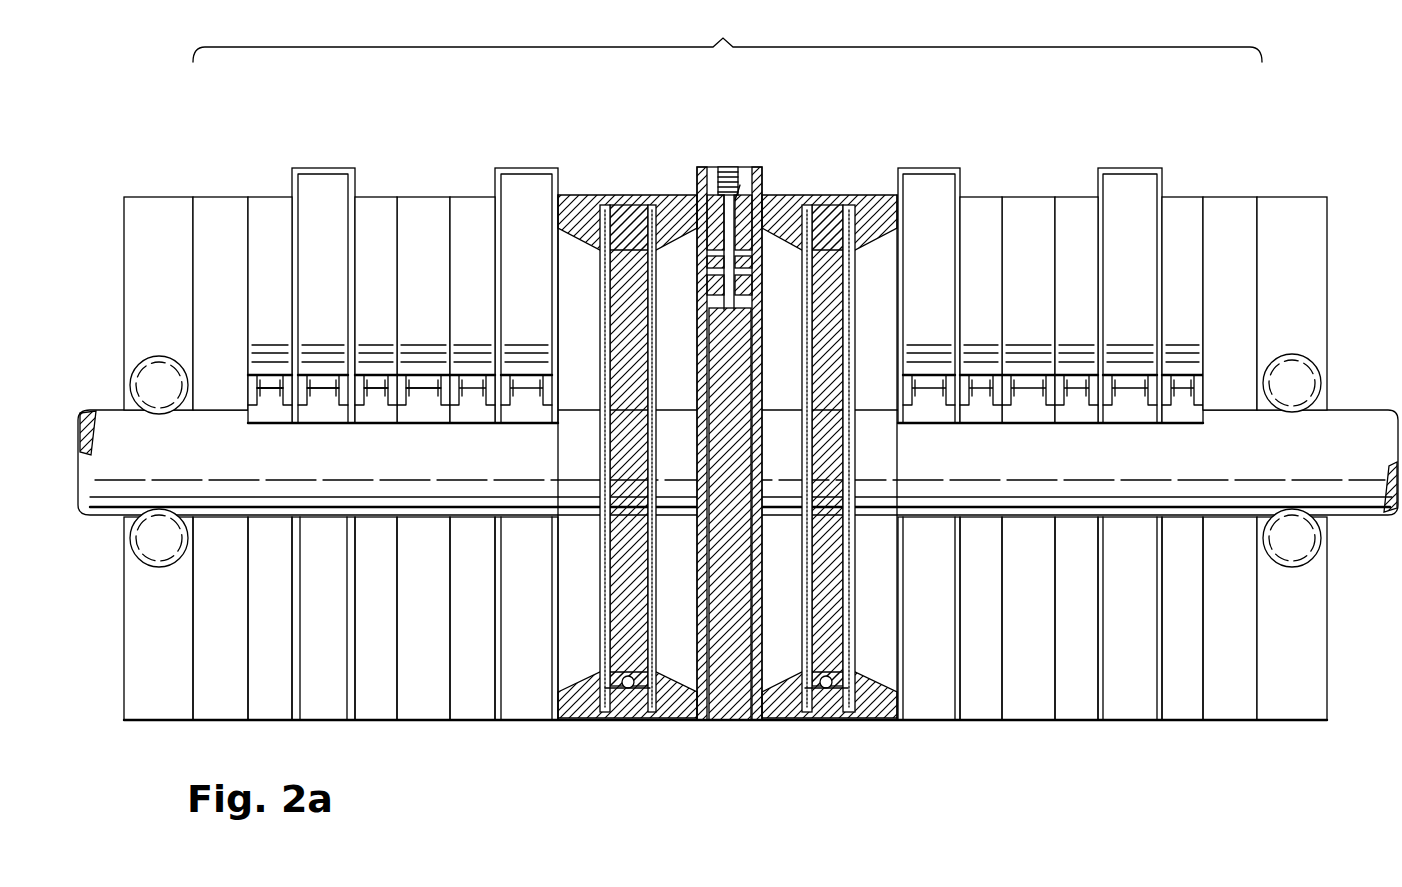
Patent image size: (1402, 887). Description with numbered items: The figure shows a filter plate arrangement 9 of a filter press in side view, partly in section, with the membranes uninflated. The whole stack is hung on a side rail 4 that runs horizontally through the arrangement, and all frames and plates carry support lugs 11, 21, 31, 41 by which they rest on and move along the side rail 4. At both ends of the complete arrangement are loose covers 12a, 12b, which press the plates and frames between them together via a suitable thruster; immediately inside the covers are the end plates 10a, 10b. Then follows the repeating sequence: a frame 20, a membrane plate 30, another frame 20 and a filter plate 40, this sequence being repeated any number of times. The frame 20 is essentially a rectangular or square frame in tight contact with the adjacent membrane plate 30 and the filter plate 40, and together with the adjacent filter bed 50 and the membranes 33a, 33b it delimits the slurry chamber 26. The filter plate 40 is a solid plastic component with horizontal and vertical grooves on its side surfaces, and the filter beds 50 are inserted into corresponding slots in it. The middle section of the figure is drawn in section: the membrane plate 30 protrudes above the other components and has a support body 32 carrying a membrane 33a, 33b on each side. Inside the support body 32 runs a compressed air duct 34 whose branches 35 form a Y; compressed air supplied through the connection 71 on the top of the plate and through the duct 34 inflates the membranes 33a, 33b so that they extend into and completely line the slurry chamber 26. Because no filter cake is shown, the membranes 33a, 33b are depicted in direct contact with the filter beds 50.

The plate arrangement 9 is at (723, 38).
The side rail 4 is at (1347, 485).
The loose cover 12a is at (150, 215).
The loose cover 12b is at (1292, 215).
The end plate 10a is at (218, 215).
The end plate 10b is at (1228, 215).
The frame 20 is at (268, 215).
The membrane plate 30 is at (318, 168).
The filter plate 40 is at (425, 215).
The slurry chamber 26 is at (575, 600).
The support body 32 is at (714, 190).
The branch 35 is at (680, 200).
The compressed air duct 34 is at (764, 185).
The bore 71 is at (740, 185).
The membrane 33a is at (678, 605).
The membrane 33b is at (780, 605).
The filter bed 50 is at (605, 690).
The support lug 11 is at (220, 412).
The support lug 21 is at (270, 412).
The support lug 31 is at (320, 412).
The support lug 41 is at (427, 412).